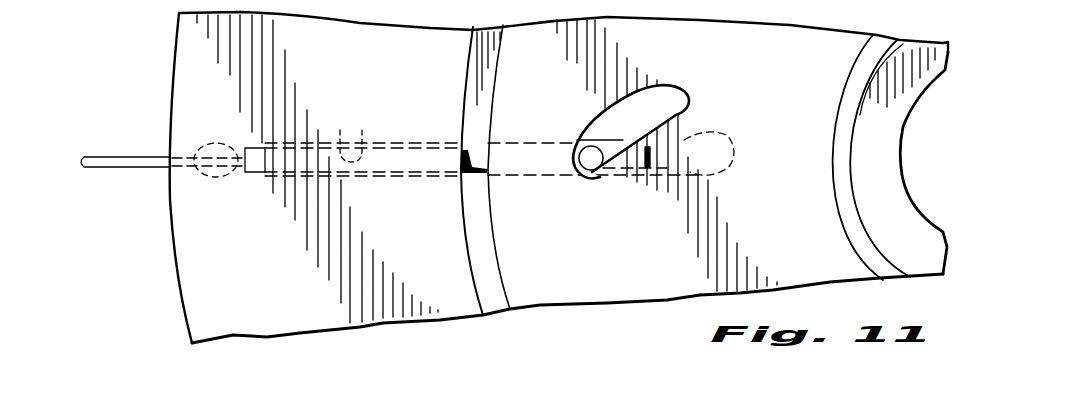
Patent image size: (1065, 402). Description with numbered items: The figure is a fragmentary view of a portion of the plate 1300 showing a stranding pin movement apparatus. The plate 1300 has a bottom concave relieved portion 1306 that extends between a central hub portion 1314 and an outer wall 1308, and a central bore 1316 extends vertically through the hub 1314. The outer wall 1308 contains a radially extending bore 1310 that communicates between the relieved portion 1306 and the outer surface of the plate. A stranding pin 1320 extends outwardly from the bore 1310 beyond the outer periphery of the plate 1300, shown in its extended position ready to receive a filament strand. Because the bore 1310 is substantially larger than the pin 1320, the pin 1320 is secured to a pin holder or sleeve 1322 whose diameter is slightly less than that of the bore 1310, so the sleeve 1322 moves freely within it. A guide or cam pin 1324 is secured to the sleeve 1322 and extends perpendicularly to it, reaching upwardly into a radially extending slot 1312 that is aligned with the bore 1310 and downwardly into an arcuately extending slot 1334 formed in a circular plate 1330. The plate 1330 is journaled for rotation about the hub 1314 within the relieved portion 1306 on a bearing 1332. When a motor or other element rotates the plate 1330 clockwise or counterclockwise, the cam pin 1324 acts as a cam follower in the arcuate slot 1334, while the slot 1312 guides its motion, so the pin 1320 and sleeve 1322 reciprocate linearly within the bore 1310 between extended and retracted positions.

The plate 1300 is at (111, 103).
The outer wall 1308 is at (195, 65).
The plate 1330 is at (784, 40).
The relieved portion 1306 is at (489, 113).
The stranding pin 1320 is at (126, 170).
The pin holder or sleeve 1322 is at (477, 150).
The radially extending bore 1310 is at (351, 137).
The radially extending slot 1312 is at (701, 138).
The arcuately extending slot 1334 is at (653, 92).
The guide or cam pin 1324 is at (583, 181).
The central hub portion 1314 is at (870, 202).
The bearing 1332 is at (848, 93).
The central bore 1316 is at (924, 205).